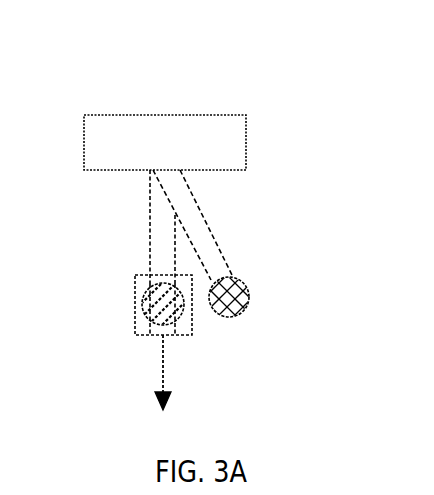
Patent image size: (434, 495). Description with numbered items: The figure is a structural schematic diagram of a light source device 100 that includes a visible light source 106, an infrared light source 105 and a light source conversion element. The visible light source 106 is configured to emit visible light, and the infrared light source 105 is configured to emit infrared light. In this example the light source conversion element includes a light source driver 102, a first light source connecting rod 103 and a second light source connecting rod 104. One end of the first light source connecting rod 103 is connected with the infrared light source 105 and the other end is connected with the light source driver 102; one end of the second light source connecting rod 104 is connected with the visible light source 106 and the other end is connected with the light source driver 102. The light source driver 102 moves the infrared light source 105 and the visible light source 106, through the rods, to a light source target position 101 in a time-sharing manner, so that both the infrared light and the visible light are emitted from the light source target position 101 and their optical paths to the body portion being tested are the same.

The light source device 100 is at (93, 86).
The light source target position 101 is at (164, 334).
The light source driver 102 is at (223, 152).
The first light source connecting rod 103 is at (106, 227).
The second light source connecting rod 104 is at (246, 225).
The infrared light source 105 is at (143, 305).
The visible light source 106 is at (268, 289).